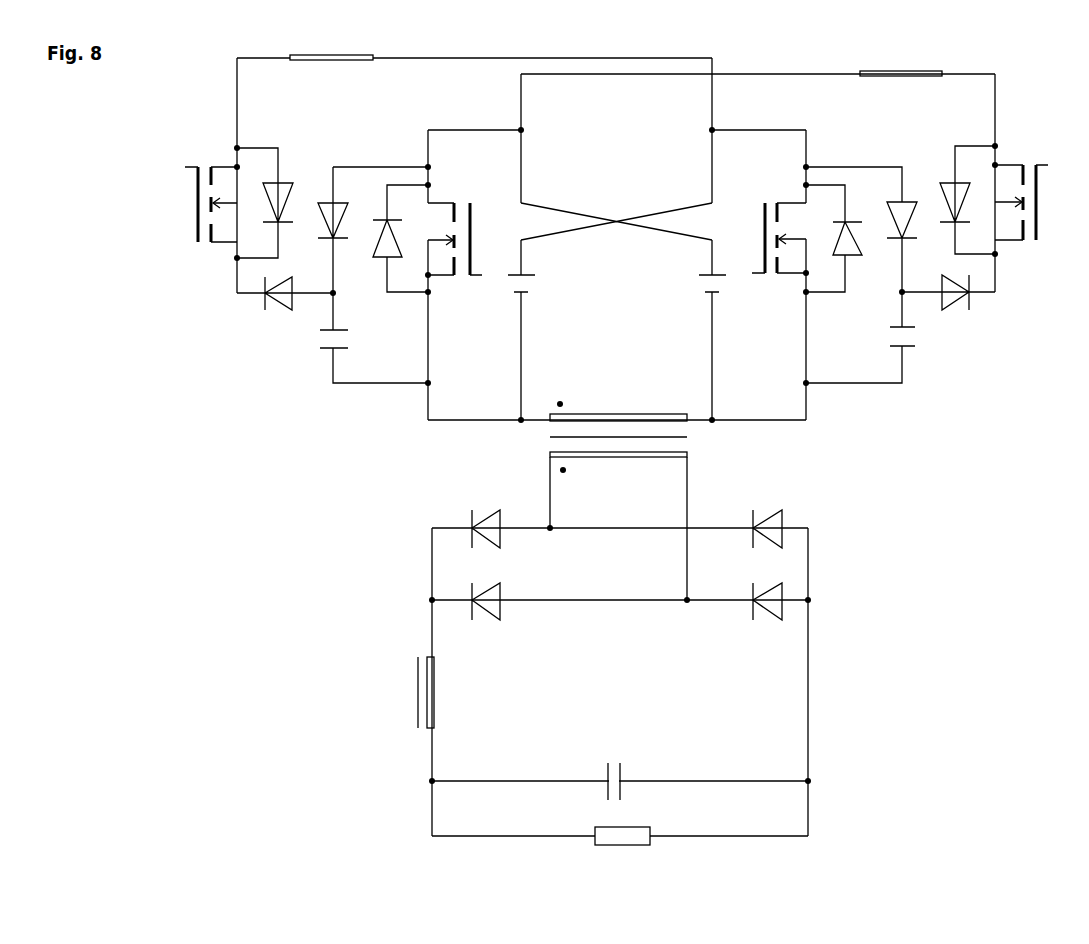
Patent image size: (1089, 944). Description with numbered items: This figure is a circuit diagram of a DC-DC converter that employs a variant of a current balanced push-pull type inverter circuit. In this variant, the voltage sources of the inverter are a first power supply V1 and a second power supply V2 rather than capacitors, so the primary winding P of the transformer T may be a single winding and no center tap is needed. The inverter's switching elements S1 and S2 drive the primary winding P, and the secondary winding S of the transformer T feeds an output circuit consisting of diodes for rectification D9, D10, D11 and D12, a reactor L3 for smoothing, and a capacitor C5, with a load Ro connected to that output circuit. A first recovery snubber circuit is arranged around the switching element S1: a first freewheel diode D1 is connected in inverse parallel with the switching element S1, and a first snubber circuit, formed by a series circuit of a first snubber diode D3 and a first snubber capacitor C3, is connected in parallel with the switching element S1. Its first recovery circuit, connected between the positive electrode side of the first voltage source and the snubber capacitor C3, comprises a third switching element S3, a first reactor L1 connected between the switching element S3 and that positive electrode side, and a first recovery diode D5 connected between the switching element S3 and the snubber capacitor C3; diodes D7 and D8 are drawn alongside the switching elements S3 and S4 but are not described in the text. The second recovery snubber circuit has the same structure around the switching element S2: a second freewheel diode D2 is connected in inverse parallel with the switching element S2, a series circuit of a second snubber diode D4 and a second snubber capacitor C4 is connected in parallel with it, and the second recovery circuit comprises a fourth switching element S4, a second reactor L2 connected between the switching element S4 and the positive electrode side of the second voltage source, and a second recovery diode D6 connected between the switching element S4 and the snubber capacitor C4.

The first reactor L1 is at (331, 46).
The second reactor L2 is at (901, 54).
The reactor for smoothing L3 is at (401, 692).
The switching element S1 is at (463, 239).
The switching element S2 is at (765, 238).
The third switching element S3 is at (193, 204).
The fourth switching element S4 is at (1036, 202).
The first freewheel diode D1 is at (400, 217).
The second freewheel diode D2 is at (834, 217).
The first snubber diode D3 is at (373, 217).
The second snubber diode D4 is at (862, 217).
The first recovery diode D5 is at (285, 309).
The second recovery diode D6 is at (948, 308).
The seventh diode D7 is at (265, 180).
The eighth diode D8 is at (967, 178).
The diode for rectification D9 is at (501, 535).
The diode for rectification D10 is at (743, 535).
The diode for rectification D11 is at (507, 608).
The diode for rectification D12 is at (743, 608).
The first snubber capacitor C3 is at (374, 338).
The second snubber capacitor C4 is at (860, 337).
The capacitor C5 is at (630, 777).
The first power supply V1 is at (693, 290).
The second power supply V2 is at (538, 290).
The transformer T is at (601, 440).
The primary winding P is at (618, 407).
The secondary winding S is at (618, 526).
The load Ro is at (622, 855).